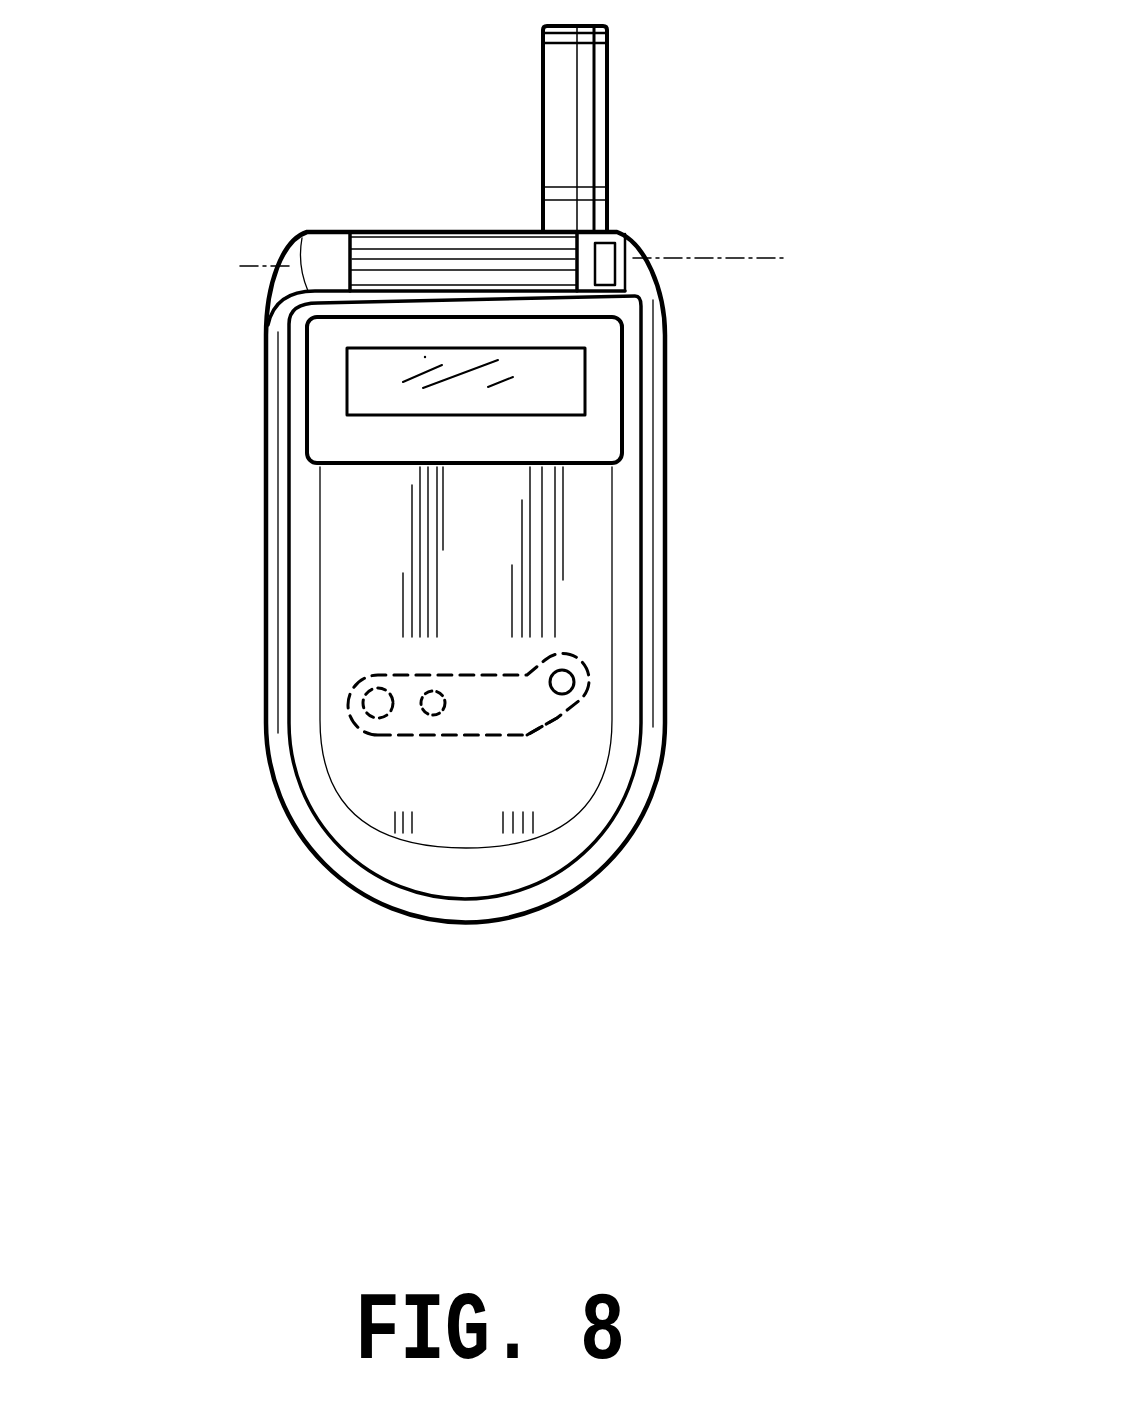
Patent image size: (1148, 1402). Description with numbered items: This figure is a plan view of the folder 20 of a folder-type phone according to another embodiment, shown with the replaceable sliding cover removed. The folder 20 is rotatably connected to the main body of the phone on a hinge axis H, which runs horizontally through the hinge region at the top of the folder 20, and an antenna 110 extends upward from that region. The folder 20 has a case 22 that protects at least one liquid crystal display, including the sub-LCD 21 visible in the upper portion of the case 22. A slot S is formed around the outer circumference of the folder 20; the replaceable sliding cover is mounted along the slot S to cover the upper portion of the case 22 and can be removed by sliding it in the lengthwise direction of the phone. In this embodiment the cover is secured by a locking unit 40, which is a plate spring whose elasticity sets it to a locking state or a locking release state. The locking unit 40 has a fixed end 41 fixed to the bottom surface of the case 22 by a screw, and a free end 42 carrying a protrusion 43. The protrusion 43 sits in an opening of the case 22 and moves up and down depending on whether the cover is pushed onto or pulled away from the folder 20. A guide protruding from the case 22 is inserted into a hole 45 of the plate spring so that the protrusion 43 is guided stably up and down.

The folder 20 is at (590, 902).
The sub-LCD 21 is at (400, 382).
The case 22 is at (370, 592).
The locking unit 40 is at (580, 663).
The fixed end 41 is at (367, 733).
The free end 42 is at (553, 718).
The protrusion 43 is at (562, 682).
The hole 45 is at (432, 715).
The antenna 110 is at (566, 128).
The hinge axis H is at (738, 257).
The slot S is at (283, 638).